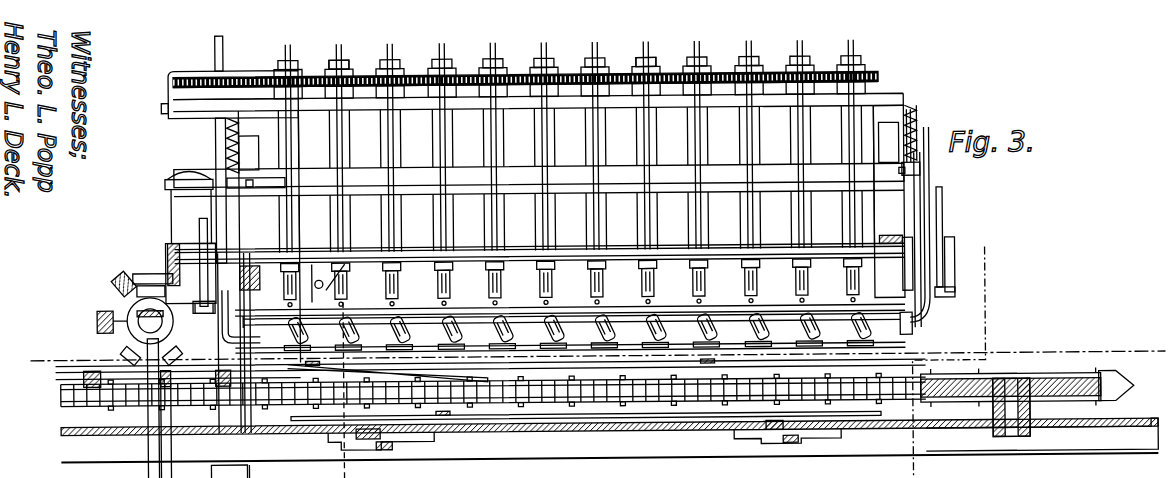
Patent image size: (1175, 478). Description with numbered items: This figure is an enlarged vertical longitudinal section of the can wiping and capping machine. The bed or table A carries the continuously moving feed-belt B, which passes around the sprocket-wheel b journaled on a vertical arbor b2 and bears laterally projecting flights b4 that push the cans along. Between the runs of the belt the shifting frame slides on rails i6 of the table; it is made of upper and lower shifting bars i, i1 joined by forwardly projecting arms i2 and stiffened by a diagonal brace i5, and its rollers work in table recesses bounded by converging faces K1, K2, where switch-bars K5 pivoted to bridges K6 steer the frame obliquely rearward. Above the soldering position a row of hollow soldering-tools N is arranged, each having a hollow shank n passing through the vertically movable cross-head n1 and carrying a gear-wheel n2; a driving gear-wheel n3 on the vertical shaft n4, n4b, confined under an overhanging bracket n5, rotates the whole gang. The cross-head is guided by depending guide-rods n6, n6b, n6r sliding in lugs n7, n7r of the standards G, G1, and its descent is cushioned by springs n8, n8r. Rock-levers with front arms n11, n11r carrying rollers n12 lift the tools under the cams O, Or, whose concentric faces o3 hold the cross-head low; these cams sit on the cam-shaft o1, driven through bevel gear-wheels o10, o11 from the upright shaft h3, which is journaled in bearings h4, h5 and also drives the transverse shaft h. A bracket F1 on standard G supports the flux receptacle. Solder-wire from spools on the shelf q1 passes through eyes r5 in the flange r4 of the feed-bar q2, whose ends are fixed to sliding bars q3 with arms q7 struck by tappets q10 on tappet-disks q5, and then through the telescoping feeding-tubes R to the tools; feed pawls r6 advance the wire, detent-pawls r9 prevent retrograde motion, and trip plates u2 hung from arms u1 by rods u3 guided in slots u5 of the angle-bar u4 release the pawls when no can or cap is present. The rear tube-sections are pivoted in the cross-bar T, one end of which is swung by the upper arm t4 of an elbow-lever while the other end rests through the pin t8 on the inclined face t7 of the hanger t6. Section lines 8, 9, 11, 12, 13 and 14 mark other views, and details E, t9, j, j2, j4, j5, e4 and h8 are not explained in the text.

The driving gear-wheel n3 is at (246, 74).
The overhanging bracket n5 is at (172, 68).
The vertical shaft n4 is at (217, 42).
The cross-head n1 is at (886, 96).
The gear-wheel n2 is at (716, 74).
The forwardly-projecting arm u1 is at (640, 62).
The section line 8 is at (338, 44).
The hollow shank n is at (748, 140).
The angle-bar u4 is at (539, 179).
The depending rod u3 is at (604, 135).
The slots u5 is at (594, 193).
The cam-shaft o1 is at (682, 250).
The springs n8 is at (217, 133).
The guide-rods n6 is at (240, 127).
The standard G is at (258, 153).
The lugs n7 is at (256, 184).
The bracket F1 is at (190, 237).
The cams O is at (201, 262).
The section line 11 is at (88, 330).
The bevel gear-wheel o11 is at (170, 250).
The bevel gear-wheel o10 is at (142, 275).
The transverse shaft h is at (127, 325).
The gear E is at (112, 314).
The bearing h4 is at (152, 403).
The front arm n11 is at (193, 304).
The shelf q1 is at (230, 335).
The solder-feed pawls r6 is at (746, 280).
The flange r4 is at (424, 272).
The eye r5 is at (700, 300).
The feed-bar q2 is at (474, 300).
The trip plate u2 is at (802, 266).
The section line 9 is at (630, 370).
The upper arm t4 is at (325, 285).
The hanger t6 is at (856, 300).
The soldering-tools N is at (578, 330).
The cross-bar T is at (571, 326).
The feeding-tubes R is at (750, 322).
The inclined face t7 is at (860, 340).
The arm t9 is at (300, 328).
The detent-pawl r9 is at (600, 330).
The shifting bar i is at (572, 349).
The section line 14 is at (595, 348).
The shaft j is at (491, 367).
The diagonal brace i5 is at (490, 378).
The bearing j4 is at (80, 375).
The collar j2 is at (205, 380).
The bearing j5 is at (90, 360).
The feed-belt B is at (740, 396).
The arms i2 is at (718, 363).
The rails i6 is at (678, 418).
The bearing h5 is at (190, 442).
The face K1 is at (740, 436).
The face K2 is at (848, 433).
The switch-bars K5 is at (776, 434).
The bridge K6 is at (800, 445).
The shifting bar i1 is at (595, 431).
The bar e4 is at (740, 464).
The bar h8 is at (874, 464).
The upright shaft h3 is at (128, 431).
The flights b4 is at (60, 410).
The vertical shaft n4b is at (210, 466).
The guide-rod n6b is at (274, 473).
The standard G1 is at (880, 137).
The tappet q10 is at (905, 212).
The guide-rods n6r is at (922, 112).
The springs n8r is at (918, 126).
The lugs n7r is at (921, 171).
The tappet-disk q5 is at (932, 205).
The arm q7 is at (943, 215).
The cams Or is at (950, 225).
The section line 13 is at (905, 340).
The concentric face o3 is at (882, 231).
The rollers n12 is at (955, 292).
The front arm n11r is at (950, 300).
The sliding bars q3 is at (912, 330).
The transverse pin t8 is at (885, 348).
The section line 12 is at (1000, 246).
The sprocket-wheel b is at (1040, 384).
The vertical arbor b2 is at (1010, 440).
The bed or table A is at (1110, 448).